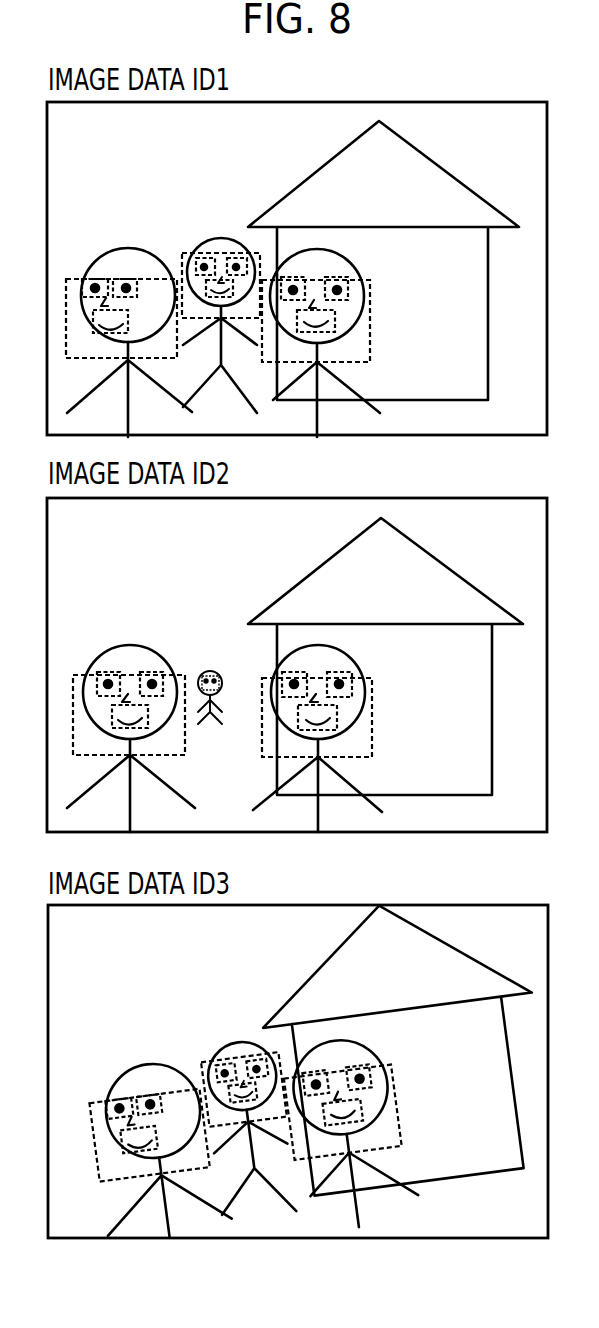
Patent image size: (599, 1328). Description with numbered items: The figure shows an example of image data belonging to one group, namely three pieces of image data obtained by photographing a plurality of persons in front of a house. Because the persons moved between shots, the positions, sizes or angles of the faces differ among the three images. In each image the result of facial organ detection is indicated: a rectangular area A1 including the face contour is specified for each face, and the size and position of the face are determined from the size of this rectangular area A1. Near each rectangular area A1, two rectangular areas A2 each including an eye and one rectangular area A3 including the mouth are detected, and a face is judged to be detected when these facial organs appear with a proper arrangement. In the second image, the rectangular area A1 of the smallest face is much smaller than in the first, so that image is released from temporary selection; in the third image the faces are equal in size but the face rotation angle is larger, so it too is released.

The rectangular area including a face contour A1 is at (247, 702).
The rectangular area including an eye A2 is at (246, 645).
The rectangular area including a mouth A3 is at (275, 737).